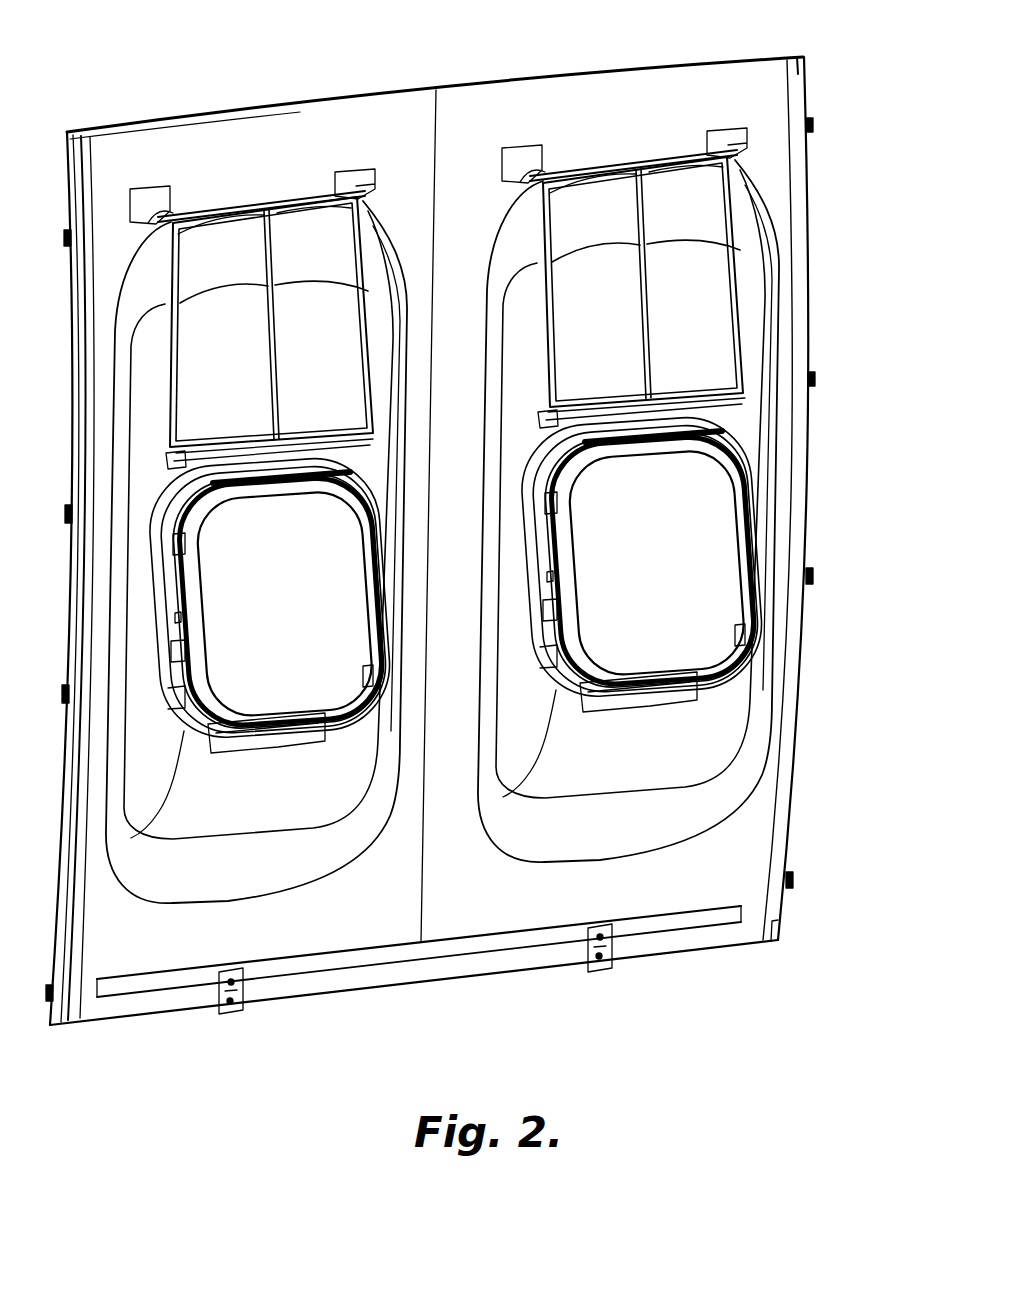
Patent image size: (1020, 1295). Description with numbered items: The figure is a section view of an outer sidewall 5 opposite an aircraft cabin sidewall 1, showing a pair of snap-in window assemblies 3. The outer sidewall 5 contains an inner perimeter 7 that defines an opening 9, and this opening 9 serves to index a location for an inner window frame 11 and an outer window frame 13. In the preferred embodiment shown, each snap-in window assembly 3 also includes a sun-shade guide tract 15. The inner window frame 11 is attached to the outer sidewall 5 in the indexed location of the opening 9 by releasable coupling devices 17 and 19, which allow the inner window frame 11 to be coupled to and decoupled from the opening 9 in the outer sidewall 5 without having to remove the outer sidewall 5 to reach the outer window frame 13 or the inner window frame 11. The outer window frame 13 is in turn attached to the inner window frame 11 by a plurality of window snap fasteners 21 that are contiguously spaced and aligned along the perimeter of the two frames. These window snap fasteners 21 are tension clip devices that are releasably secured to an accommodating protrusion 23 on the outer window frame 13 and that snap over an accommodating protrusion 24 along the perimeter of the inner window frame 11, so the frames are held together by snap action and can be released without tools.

The aircraft cabin sidewall 1 is at (190, 116).
The snap-in window assembly 3 is at (753, 520).
The outer sidewall 5 is at (664, 439).
The inner perimeter 7 is at (713, 712).
The opening 9 is at (686, 553).
The inner window frame 11 is at (747, 433).
The outer window frame 13 is at (497, 772).
The sun-shade guide tract 15 is at (747, 273).
The releasable coupling device 17 is at (758, 397).
The releasable coupling device 19 is at (652, 705).
The window snap fastener 21 is at (750, 483).
The accommodating protrusion 23 is at (540, 614).
The accommodating protrusion 24 is at (545, 576).